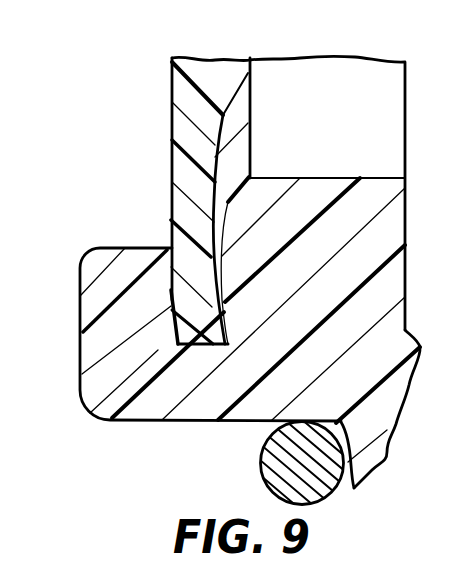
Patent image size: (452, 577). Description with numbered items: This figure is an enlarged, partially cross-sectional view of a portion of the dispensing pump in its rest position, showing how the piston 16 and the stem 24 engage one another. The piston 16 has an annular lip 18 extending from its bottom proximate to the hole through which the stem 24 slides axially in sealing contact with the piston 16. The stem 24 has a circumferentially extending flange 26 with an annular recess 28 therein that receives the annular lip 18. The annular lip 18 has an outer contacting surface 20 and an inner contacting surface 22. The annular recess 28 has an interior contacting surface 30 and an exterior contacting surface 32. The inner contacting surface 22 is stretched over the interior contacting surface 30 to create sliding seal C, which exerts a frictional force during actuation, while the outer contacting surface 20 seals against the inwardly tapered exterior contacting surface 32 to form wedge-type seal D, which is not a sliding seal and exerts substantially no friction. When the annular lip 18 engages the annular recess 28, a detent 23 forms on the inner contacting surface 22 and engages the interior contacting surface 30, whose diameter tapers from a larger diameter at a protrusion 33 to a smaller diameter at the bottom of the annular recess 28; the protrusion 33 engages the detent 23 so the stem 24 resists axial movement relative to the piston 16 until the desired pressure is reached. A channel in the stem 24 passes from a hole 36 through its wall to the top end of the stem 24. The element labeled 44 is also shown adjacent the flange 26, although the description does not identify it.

The piston 16 is at (210, 76).
The hole 36 is at (347, 76).
The annular lip 18 is at (188, 172).
The outer contacting surface 20 is at (167, 248).
The inner contacting surface 22 is at (218, 237).
The protrusion 33 is at (246, 258).
The interior contacting surface 30 is at (224, 298).
The interior seal C is at (407, 245).
The exterior contacting surface 32 is at (172, 292).
The exterior seal D is at (176, 328).
The flange 26 is at (123, 377).
The annular recess 28 is at (195, 345).
The detent 23 is at (215, 345).
The stem 24 is at (373, 412).
The O-ring 44 is at (287, 463).